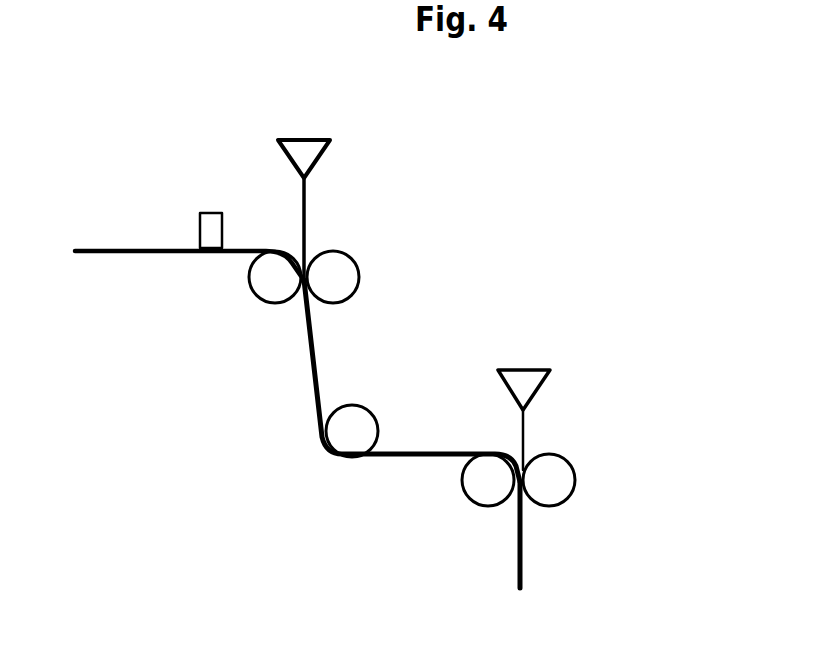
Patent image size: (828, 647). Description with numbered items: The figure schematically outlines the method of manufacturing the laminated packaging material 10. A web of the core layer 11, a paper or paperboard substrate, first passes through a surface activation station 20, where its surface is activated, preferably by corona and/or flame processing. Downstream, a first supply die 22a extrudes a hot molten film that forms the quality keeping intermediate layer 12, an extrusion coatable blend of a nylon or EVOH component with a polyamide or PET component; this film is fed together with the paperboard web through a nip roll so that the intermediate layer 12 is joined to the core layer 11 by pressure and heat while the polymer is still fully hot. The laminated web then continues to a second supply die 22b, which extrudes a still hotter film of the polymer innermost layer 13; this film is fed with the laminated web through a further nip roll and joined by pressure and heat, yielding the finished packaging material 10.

The laminated packaging material 10 is at (524, 534).
The core layer 11 is at (103, 248).
The quality keeping intermediate layer 12 is at (302, 215).
The innermost layer 13 is at (525, 434).
The surface activation station 20 is at (200, 218).
The supply die 22a is at (280, 140).
The supply die 22b is at (499, 371).